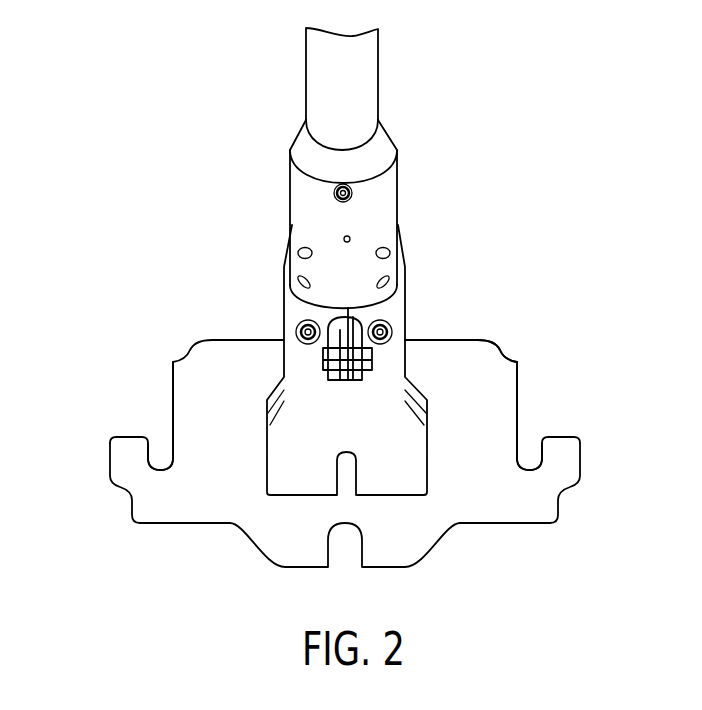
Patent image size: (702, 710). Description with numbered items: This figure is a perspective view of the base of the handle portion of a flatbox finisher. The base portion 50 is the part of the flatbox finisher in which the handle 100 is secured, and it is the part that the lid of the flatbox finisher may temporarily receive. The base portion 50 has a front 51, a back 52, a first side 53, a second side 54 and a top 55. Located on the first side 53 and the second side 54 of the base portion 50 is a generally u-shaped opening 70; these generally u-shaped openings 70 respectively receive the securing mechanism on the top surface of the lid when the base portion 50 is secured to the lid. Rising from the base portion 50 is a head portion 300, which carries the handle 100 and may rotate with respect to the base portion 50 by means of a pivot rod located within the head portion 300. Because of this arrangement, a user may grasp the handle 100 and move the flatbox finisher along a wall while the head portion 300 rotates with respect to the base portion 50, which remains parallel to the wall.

The handle 100 is at (352, 93).
The head portion 300 is at (392, 308).
The base portion 50 is at (207, 410).
The front 51 is at (308, 567).
The back 52 is at (440, 340).
The first side 53 is at (110, 462).
The second side 54 is at (580, 463).
The top 55 is at (482, 410).
The generally u-shaped opening 70 is at (160, 457).